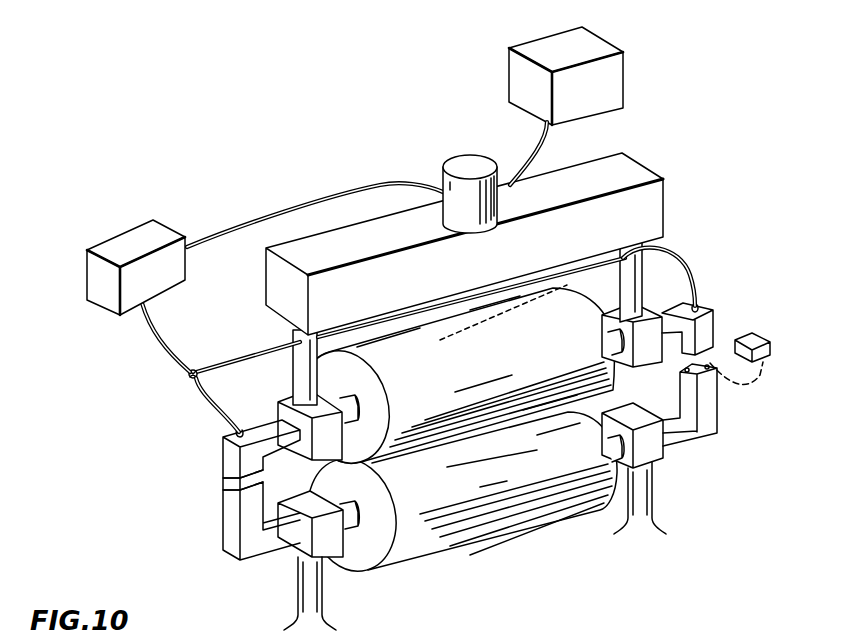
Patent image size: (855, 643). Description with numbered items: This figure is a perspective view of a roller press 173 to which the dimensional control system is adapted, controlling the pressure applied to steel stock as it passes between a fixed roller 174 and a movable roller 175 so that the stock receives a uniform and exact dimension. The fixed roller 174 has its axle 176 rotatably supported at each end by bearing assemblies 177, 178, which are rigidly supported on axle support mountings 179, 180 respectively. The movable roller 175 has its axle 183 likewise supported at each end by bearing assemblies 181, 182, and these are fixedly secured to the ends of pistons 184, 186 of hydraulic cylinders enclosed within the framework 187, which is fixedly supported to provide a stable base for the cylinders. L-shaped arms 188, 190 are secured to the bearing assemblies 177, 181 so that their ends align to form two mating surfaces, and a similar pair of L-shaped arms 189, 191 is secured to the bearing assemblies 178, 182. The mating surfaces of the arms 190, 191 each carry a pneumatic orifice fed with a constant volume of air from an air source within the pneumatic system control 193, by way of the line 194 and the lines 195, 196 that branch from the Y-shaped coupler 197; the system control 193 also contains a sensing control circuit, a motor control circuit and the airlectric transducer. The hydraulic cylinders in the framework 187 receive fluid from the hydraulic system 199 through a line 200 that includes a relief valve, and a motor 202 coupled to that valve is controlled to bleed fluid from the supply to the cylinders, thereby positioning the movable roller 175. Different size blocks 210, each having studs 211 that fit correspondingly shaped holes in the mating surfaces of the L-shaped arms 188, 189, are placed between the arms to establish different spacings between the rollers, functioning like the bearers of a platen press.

The roller press 173 is at (670, 180).
The fixed roller 174 is at (423, 547).
The movable roller 175 is at (513, 373).
The axle 176 is at (357, 524).
The bearing assembly 177 is at (303, 543).
The bearing assembly 178 is at (657, 452).
The axle support mounting 179 is at (293, 590).
The axle support mounting 180 is at (652, 497).
The bearing assembly 181 is at (280, 407).
The bearing assembly 182 is at (650, 355).
The axle 183 is at (353, 423).
The piston 184 is at (300, 342).
The piston 186 is at (635, 257).
The framework 187 is at (632, 168).
The L-shaped arm 188 is at (230, 533).
The L-shaped arm 189 is at (707, 412).
The L-shaped arm 190 is at (227, 462).
The L-shaped arm 191 is at (708, 323).
The pneumatic system control 193 is at (163, 232).
The line 194 is at (157, 322).
The line 195 is at (195, 398).
The line 196 is at (693, 278).
The Y-shaped coupler 197 is at (191, 367).
The hydraulic system 199 is at (617, 61).
The line 200 is at (538, 153).
The motor 202 is at (452, 154).
The block 210 is at (225, 487).
The stud 211 is at (737, 353).